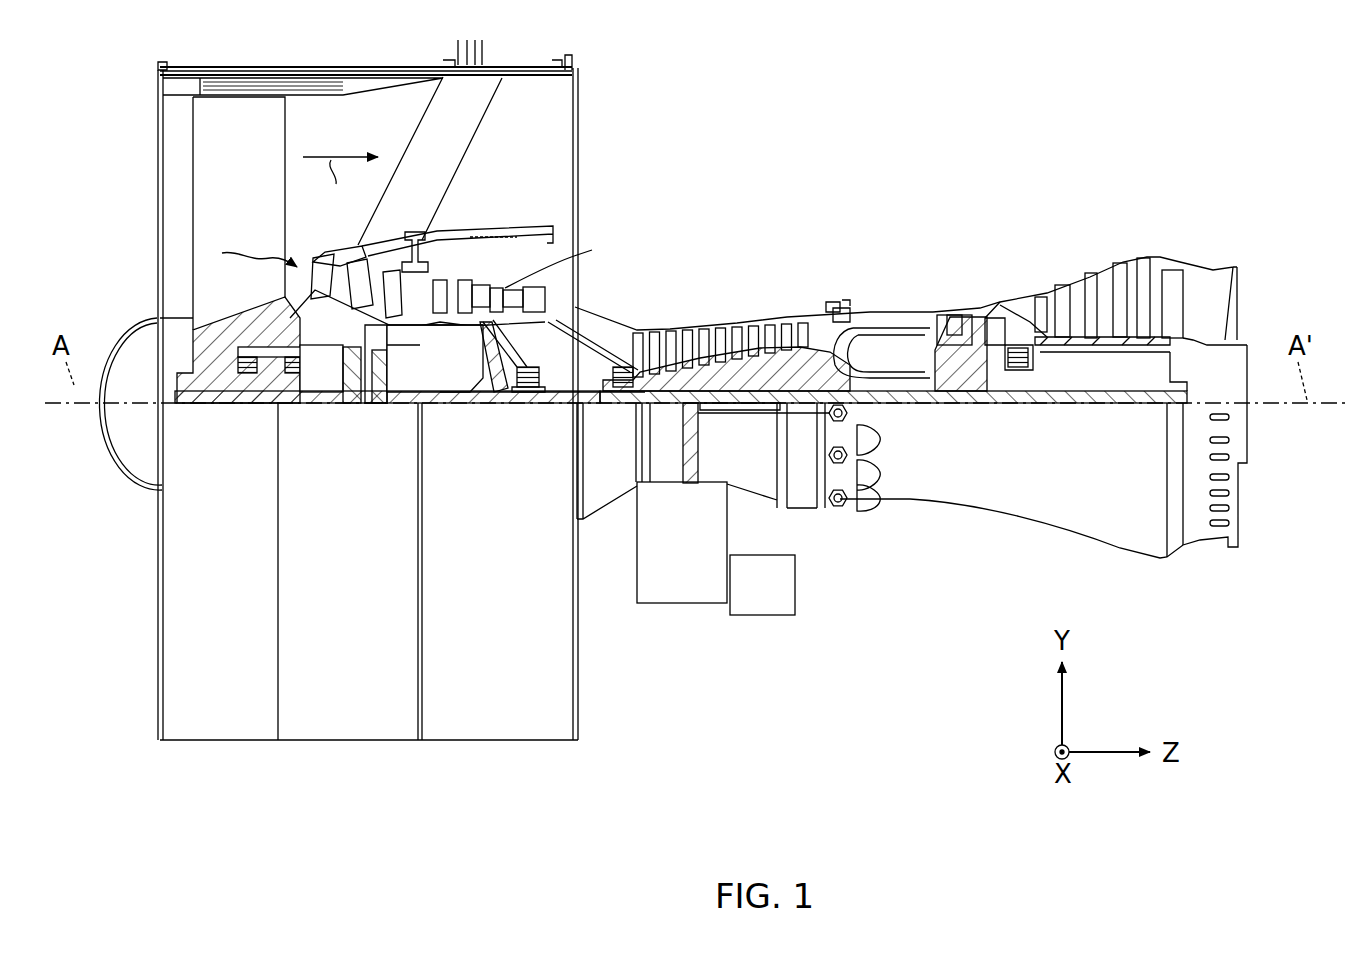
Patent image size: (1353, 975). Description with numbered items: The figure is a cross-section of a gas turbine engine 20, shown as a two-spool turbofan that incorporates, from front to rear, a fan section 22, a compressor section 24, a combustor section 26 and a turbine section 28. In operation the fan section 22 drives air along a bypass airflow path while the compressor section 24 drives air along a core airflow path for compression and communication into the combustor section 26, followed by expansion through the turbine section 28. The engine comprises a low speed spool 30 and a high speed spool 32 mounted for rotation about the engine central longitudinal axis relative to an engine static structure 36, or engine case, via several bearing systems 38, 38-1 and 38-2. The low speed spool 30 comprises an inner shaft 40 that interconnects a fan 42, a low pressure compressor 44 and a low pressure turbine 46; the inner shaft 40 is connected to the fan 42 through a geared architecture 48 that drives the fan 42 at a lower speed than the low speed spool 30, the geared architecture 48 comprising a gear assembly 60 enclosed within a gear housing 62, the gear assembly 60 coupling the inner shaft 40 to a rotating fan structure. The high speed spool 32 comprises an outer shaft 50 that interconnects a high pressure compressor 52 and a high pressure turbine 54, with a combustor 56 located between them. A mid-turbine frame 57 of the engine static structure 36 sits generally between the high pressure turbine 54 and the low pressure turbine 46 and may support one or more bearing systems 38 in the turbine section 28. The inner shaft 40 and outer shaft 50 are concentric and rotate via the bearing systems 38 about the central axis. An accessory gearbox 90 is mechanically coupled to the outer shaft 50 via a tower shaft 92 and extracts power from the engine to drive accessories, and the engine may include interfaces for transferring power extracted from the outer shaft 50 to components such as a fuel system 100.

The gas turbine engine 20 is at (938, 100).
The fan section 22 is at (415, 47).
The compressor section 24 is at (423, 186).
The combustor section 26 is at (940, 186).
The turbine section 28 is at (1173, 186).
The low speed spool 30 is at (757, 420).
The high speed spool 32 is at (810, 360).
The engine static structure 36 is at (150, 741).
The bearing system 38 is at (1005, 363).
The bearing system 38-1 is at (247, 378).
The bearing system 38-2 is at (528, 394).
The inner shaft 40 is at (598, 415).
The fan 42 is at (250, 210).
The low pressure compressor 44 is at (507, 282).
The low pressure turbine 46 is at (1102, 284).
The geared architecture 48 is at (366, 412).
The outer shaft 50 is at (887, 378).
The high pressure compressor 52 is at (752, 330).
The high pressure turbine 54 is at (957, 310).
The combustor 56 is at (888, 332).
The mid-turbine frame 57 is at (1008, 293).
The gear assembly 60 is at (393, 360).
The gear housing 62 is at (393, 338).
The accessory gearbox 90 is at (686, 582).
The tower shaft 92 is at (690, 468).
The fuel system 100 is at (764, 590).